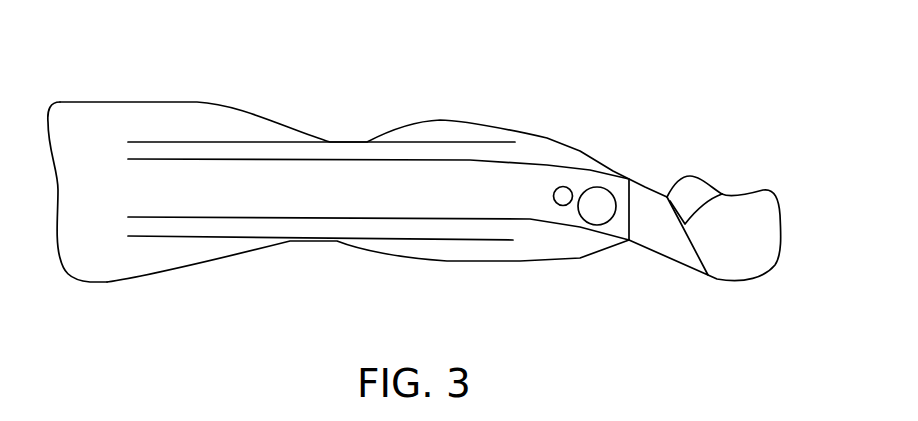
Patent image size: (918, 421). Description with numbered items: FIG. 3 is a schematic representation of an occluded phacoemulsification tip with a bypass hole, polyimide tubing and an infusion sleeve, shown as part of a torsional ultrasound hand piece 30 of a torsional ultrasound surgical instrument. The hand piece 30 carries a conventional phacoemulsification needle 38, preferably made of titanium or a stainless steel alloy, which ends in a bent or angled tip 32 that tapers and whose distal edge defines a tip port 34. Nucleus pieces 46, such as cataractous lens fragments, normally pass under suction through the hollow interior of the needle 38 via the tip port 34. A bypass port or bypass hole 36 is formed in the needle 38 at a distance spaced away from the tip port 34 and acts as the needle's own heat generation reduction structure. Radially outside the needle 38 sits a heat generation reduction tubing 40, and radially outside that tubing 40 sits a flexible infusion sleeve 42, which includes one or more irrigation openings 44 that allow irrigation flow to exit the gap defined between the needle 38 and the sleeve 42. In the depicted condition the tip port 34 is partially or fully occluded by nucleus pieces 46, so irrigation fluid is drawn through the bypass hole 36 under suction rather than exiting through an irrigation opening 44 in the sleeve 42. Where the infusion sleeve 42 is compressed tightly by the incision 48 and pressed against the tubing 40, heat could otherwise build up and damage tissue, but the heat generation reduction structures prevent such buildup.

The torsional ultrasound hand piece 30 is at (513, 95).
The bent or angled tip 32 is at (662, 253).
The tip port 34 is at (722, 193).
The bypass port or bypass hole 36 is at (568, 186).
The phacoemulsification needle 38 is at (435, 200).
The heat generation reduction tubing 40 is at (167, 141).
The flexible infusion sleeve 42 is at (93, 282).
The irrigation opening 44 is at (608, 184).
The nucleus pieces 46 is at (757, 265).
The incision 48 is at (315, 240).